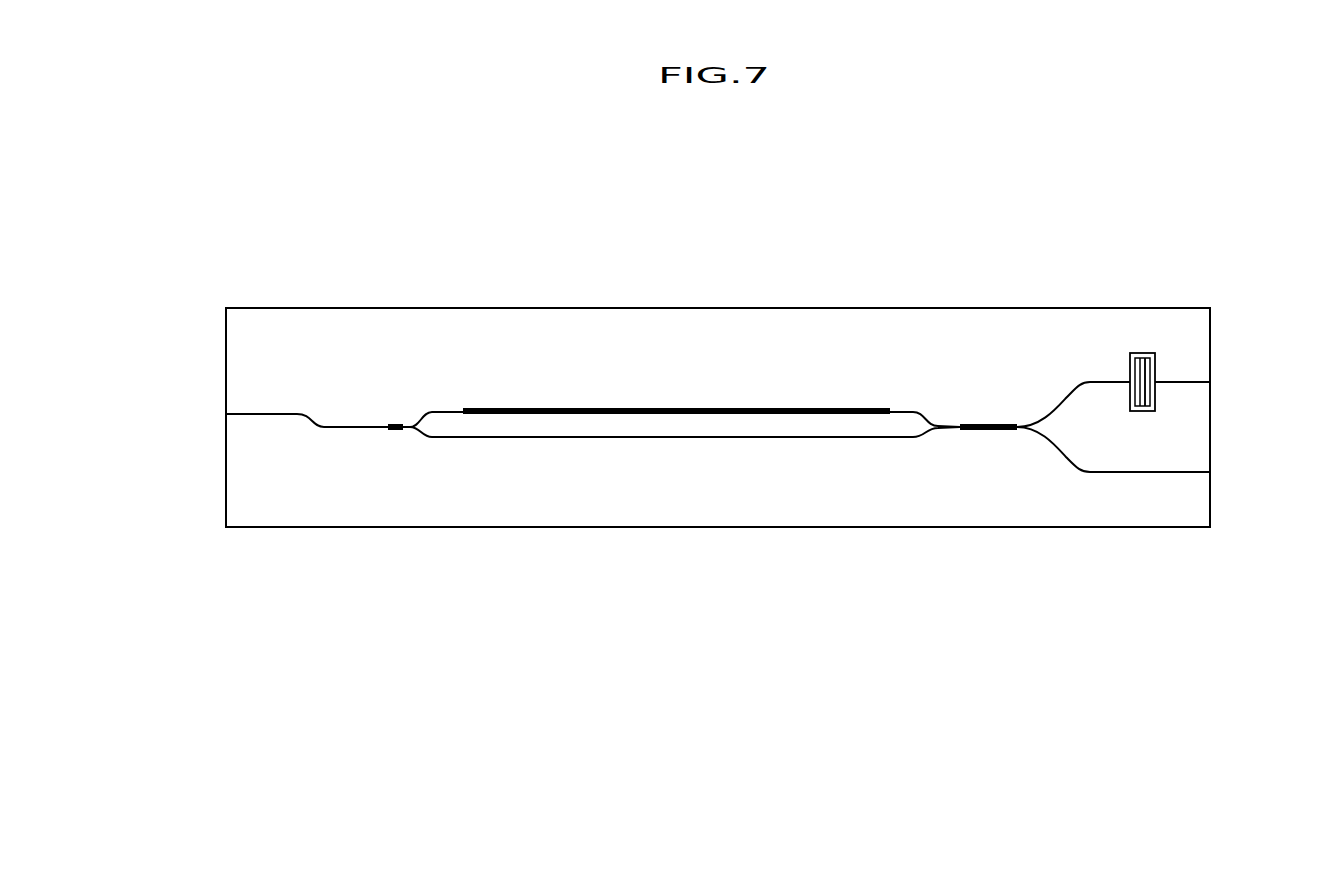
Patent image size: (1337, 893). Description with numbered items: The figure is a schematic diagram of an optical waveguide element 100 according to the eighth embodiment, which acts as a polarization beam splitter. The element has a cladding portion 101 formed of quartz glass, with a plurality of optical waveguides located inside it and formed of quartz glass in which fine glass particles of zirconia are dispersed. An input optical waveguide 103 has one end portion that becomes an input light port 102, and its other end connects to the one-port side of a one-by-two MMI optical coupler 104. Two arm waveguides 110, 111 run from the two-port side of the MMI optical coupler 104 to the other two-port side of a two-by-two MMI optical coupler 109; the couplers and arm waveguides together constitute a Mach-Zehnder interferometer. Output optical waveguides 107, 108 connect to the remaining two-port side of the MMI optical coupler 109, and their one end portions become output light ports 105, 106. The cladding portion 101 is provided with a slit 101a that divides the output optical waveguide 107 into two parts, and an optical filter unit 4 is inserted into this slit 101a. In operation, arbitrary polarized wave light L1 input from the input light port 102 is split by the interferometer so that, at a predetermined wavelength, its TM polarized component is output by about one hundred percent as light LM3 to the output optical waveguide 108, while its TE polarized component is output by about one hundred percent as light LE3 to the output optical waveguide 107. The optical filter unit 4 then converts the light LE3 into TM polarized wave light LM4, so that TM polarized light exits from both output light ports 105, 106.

The optical waveguide element 100 is at (1209, 189).
The cladding portion 101 is at (905, 308).
The slit 101a is at (1153, 397).
The input light port 102 is at (227, 414).
The input optical waveguide 103 is at (297, 414).
The 1×2 MMI optical coupler 104 is at (398, 442).
The output light port 105 is at (1210, 382).
The output light port 106 is at (1210, 472).
The output optical waveguide 107 is at (1078, 380).
The output optical waveguide 108 is at (1081, 473).
The 2×2 MMI optical coupler 109 is at (986, 442).
The arm waveguide 110 is at (677, 408).
The arm waveguide 111 is at (666, 438).
The optical filter unit 4 is at (1153, 389).
The arbitrary polarized wave light L1 is at (216, 414).
The light (TE polarized) LE3 is at (1119, 368).
The TM polarized wave light LM4 is at (1196, 368).
The light (TM polarized) LM3 is at (1182, 452).